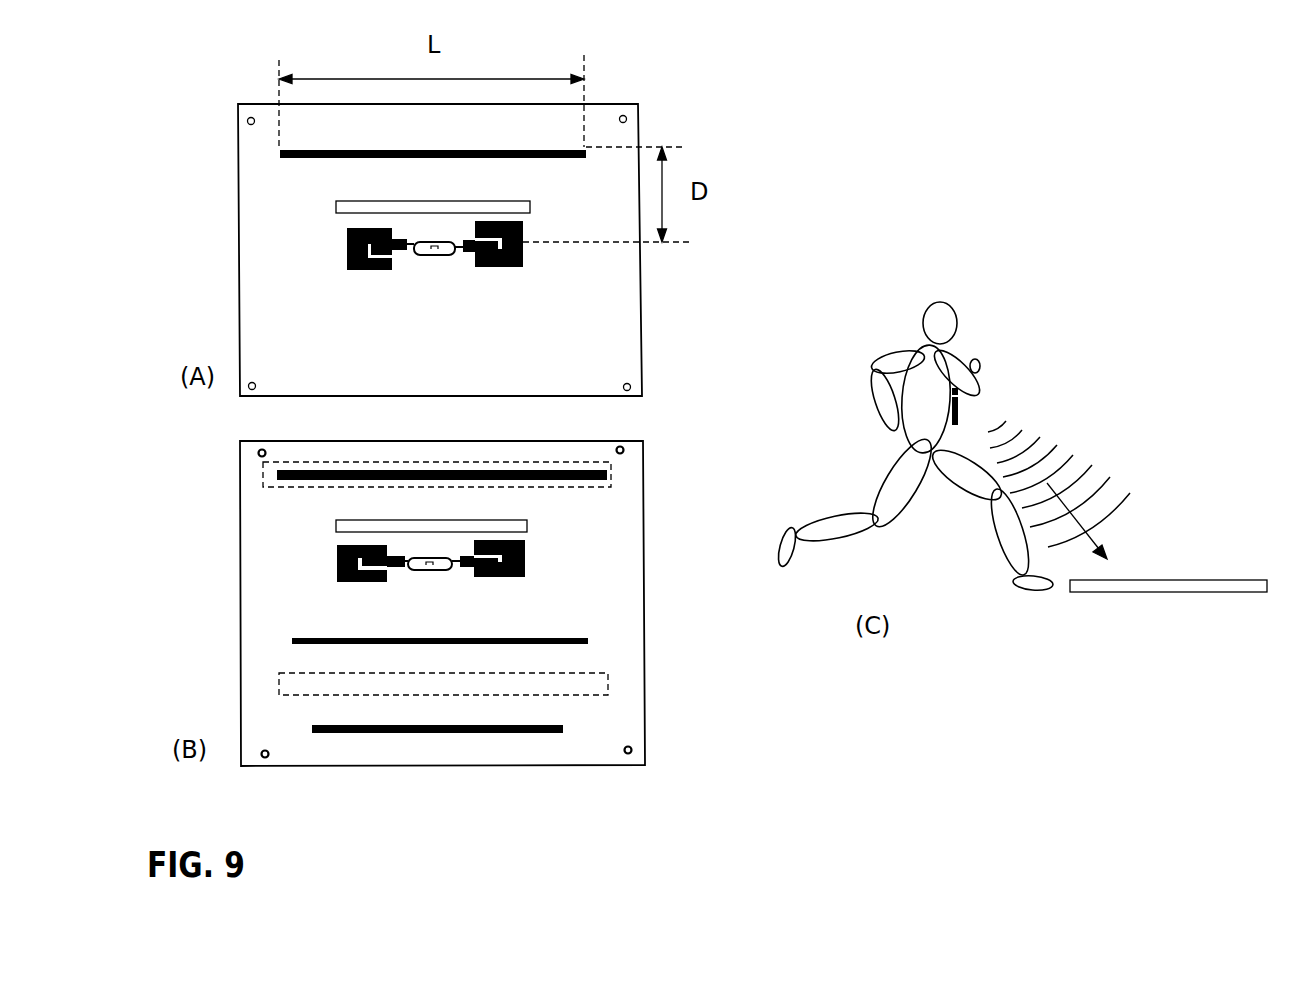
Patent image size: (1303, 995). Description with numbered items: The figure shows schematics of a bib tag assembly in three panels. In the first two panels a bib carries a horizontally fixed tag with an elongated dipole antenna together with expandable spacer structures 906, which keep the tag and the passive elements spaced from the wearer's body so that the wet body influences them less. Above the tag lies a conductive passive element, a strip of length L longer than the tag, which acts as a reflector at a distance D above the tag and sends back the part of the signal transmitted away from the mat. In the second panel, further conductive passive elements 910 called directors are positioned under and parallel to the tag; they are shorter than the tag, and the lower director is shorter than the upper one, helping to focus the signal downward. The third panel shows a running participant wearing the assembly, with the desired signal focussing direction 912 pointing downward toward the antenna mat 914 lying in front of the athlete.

The expandable spacer structure 906 is at (336, 207).
The passive elements 910 is at (379, 655).
The signal focussing direction 912 is at (1073, 490).
The antenna mat 914 is at (1200, 580).